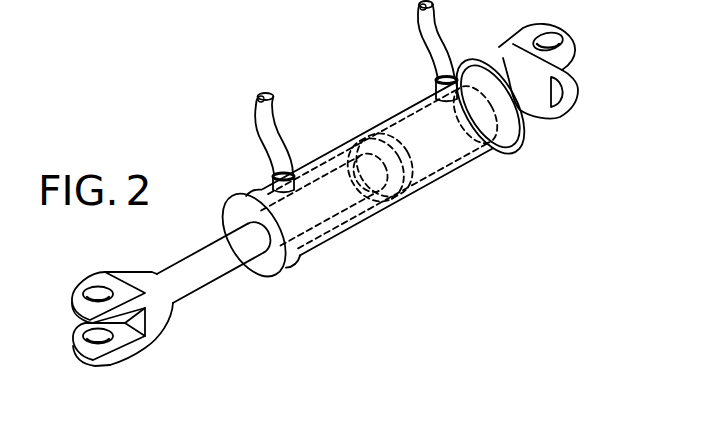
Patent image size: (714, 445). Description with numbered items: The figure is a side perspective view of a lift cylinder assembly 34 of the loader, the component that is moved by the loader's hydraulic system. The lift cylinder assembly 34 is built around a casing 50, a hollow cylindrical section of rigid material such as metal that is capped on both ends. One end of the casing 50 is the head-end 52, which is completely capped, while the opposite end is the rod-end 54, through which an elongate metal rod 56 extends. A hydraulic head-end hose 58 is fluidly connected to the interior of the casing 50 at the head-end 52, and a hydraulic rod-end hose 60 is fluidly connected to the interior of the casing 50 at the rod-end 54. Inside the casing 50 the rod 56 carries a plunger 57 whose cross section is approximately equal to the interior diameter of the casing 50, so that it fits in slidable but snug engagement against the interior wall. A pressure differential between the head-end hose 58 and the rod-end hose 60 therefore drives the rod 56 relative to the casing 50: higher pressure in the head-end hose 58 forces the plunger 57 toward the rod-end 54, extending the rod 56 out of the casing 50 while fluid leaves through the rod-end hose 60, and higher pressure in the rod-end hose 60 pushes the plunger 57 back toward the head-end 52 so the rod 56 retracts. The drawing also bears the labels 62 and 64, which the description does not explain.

The hydraulic cylinder 34 is at (340, 204).
The cylinder barrel 50 is at (467, 162).
The cap end 52 is at (524, 166).
The rod end cap 54 is at (292, 289).
The piston rod 56 is at (193, 293).
The piston 57 is at (395, 197).
The hydraulic port hose 58 is at (423, 30).
The hydraulic port hose 60 is at (272, 121).
The cap end clevis 62 is at (560, 106).
The rod end clevis 64 is at (108, 362).